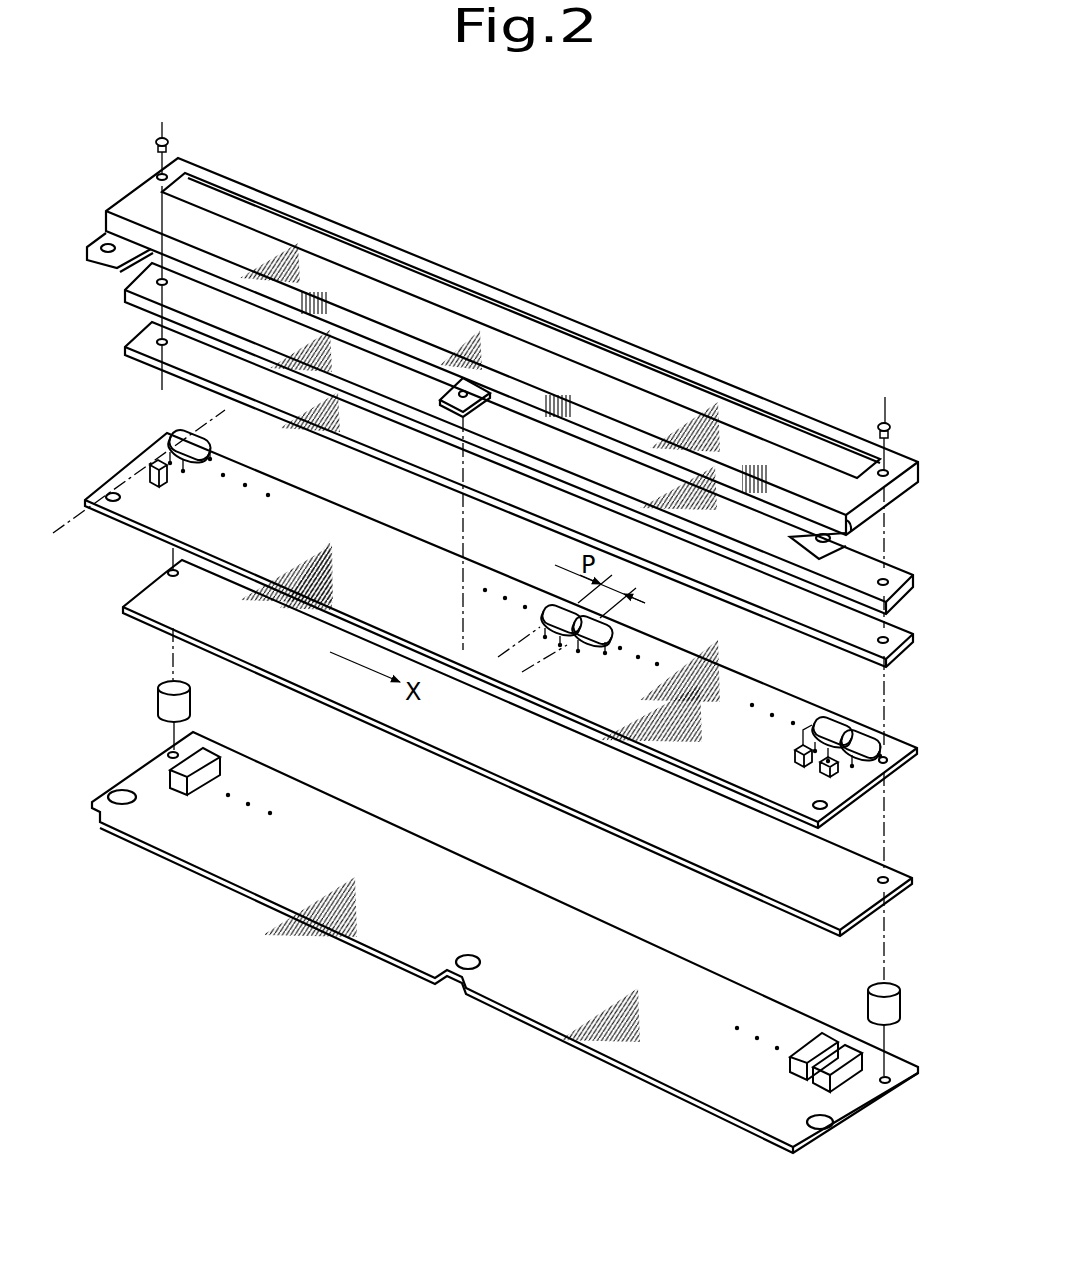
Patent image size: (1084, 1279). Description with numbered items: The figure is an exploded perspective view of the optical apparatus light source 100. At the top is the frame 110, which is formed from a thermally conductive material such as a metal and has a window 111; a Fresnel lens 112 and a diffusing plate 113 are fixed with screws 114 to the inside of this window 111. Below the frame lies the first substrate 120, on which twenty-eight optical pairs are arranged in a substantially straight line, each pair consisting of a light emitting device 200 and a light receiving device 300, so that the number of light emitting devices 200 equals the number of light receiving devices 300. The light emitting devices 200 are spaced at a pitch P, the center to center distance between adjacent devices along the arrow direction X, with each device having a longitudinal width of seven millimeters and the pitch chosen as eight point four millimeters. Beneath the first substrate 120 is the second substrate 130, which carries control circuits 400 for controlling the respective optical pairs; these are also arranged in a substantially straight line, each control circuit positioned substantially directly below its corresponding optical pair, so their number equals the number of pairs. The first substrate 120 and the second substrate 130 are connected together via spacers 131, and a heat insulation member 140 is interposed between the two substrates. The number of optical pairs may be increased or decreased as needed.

The optical apparatus light source 100 is at (547, 212).
The frame 110 is at (253, 187).
The window 111 is at (560, 327).
The Fresnel lens 112 is at (124, 296).
The diffusing plate 113 is at (124, 352).
The screws 114 is at (166, 141).
The first substrate 120 is at (345, 492).
The second substrate 130 is at (247, 900).
The spacers 131 is at (158, 700).
The heat insulation member 140 is at (125, 610).
The light emitting device 200 is at (212, 425).
The light receiving device 300 is at (158, 483).
The control circuits 400 is at (228, 757).